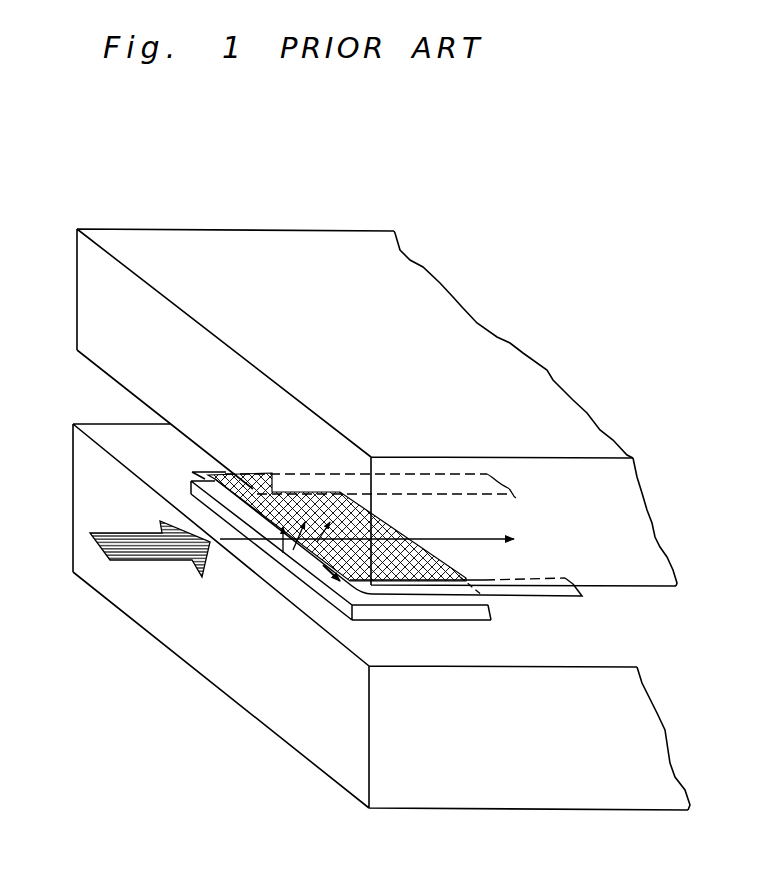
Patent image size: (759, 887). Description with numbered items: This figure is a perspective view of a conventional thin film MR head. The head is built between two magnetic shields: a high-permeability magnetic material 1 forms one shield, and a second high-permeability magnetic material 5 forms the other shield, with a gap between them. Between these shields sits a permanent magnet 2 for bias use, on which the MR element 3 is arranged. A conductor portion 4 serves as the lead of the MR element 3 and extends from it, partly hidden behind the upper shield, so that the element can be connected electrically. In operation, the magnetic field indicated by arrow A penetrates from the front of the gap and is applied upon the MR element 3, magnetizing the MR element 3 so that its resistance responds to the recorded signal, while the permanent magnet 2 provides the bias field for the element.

The high-permeability magnetic material 1 is at (250, 693).
The permanent magnet 2 is at (372, 607).
The MR element 3 is at (362, 518).
The conductor portion 4 is at (436, 457).
The high-permeability magnetic material 5 is at (98, 322).